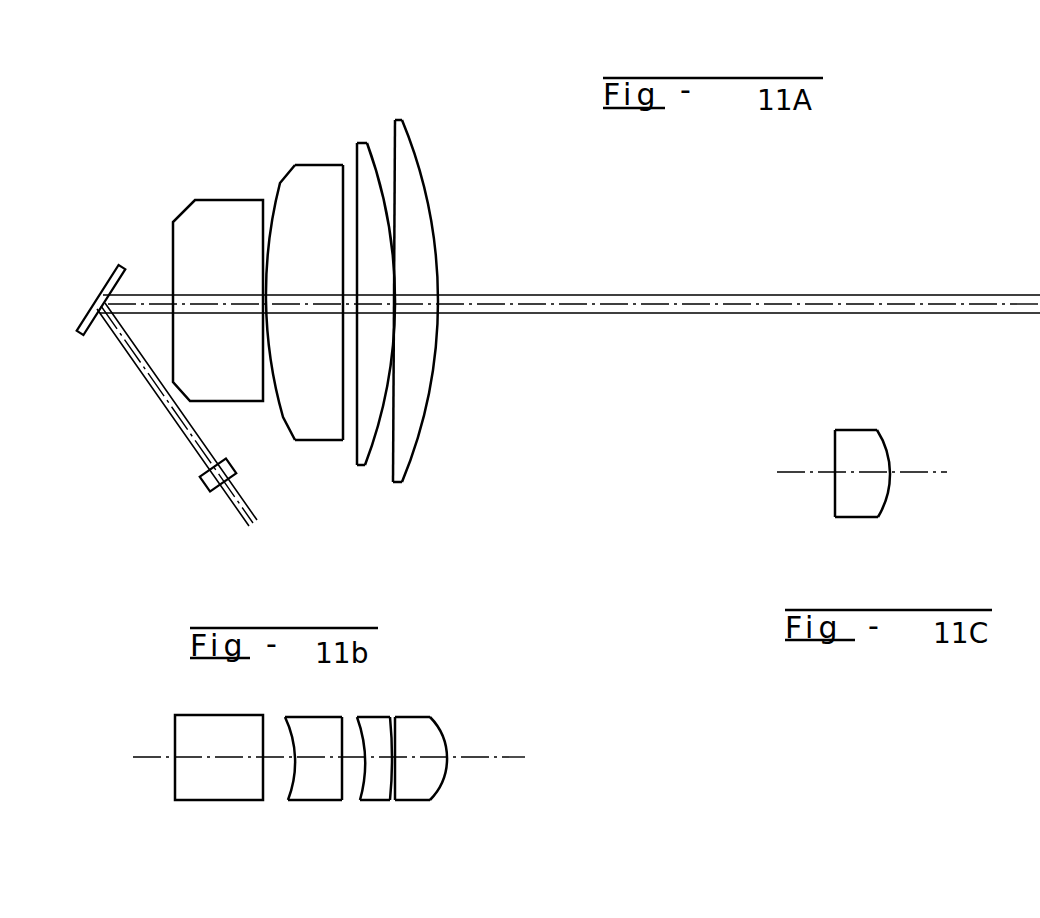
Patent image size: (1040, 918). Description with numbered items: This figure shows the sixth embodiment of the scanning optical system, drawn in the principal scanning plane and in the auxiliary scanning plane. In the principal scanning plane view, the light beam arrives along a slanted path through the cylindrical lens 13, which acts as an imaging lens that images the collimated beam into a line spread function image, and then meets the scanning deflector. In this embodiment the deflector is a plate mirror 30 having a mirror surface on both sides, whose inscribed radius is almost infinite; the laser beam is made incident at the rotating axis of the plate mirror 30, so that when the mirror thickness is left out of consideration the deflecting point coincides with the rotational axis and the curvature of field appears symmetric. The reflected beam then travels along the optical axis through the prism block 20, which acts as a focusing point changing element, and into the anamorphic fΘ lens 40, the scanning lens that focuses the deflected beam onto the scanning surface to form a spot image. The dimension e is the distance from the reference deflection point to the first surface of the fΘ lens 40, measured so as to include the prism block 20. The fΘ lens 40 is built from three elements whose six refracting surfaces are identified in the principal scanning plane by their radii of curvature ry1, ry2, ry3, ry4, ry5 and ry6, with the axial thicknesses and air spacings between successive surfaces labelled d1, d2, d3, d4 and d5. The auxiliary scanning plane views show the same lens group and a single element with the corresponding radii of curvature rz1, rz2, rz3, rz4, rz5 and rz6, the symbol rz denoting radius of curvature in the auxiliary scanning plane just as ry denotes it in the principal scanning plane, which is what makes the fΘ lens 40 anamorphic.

In FIG. 11A, the cylindrical lens 13 is at (202, 480).
In FIG. 11A, the prism block 20 is at (218, 200).
In FIG. 11B, the prism block 20 is at (219, 757).
In FIG. 11A, the plate mirror 30 is at (108, 273).
In FIG. 11A, the anamorphic fΘ lens 40 is at (412, 81).
In FIG. 11B, the anamorphic fΘ lens 40 is at (360, 799).
In FIG. 11A, the distance from the reference deflection point to the first surface of the fΘ lens e is at (153, 302).
In FIG. 11A, the lens thickness d1 is at (312, 303).
In FIG. 11A, the lens thickness d2 is at (348, 303).
In FIG. 11A, the lens thickness d3 is at (357, 143).
In FIG. 11A, the lens thickness d4 is at (396, 303).
In FIG. 11A, the lens thickness d5 is at (420, 303).
In FIG. 11A, the radius of curvature in the principal scanning plane ry1 is at (287, 395).
In FIG. 11A, the radius of curvature in the principal scanning plane ry2 is at (345, 445).
In FIG. 11A, the radius of curvature in the principal scanning plane ry3 is at (354, 452).
In FIG. 11A, the radius of curvature in the principal scanning plane ry4 is at (374, 455).
In FIG. 11A, the radius of curvature in the principal scanning plane ry5 is at (390, 470).
In FIG. 11A, the radius of curvature in the principal scanning plane ry6 is at (417, 445).
In FIG. 11B, the radius of curvature in the auxiliary scanning plane rz1 is at (288, 782).
In FIG. 11C, the radius of curvature in the auxiliary scanning plane rz1 is at (887, 497).
In FIG. 11B, the radius of curvature in the auxiliary scanning plane rz2 is at (340, 785).
In FIG. 11C, the radius of curvature in the auxiliary scanning plane rz2 is at (832, 505).
In FIG. 11B, the radius of curvature in the auxiliary scanning plane rz3 is at (358, 777).
In FIG. 11B, the radius of curvature in the auxiliary scanning plane rz4 is at (390, 775).
In FIG. 11B, the radius of curvature in the auxiliary scanning plane rz5 is at (393, 778).
In FIG. 11B, the radius of curvature in the auxiliary scanning plane rz6 is at (443, 785).